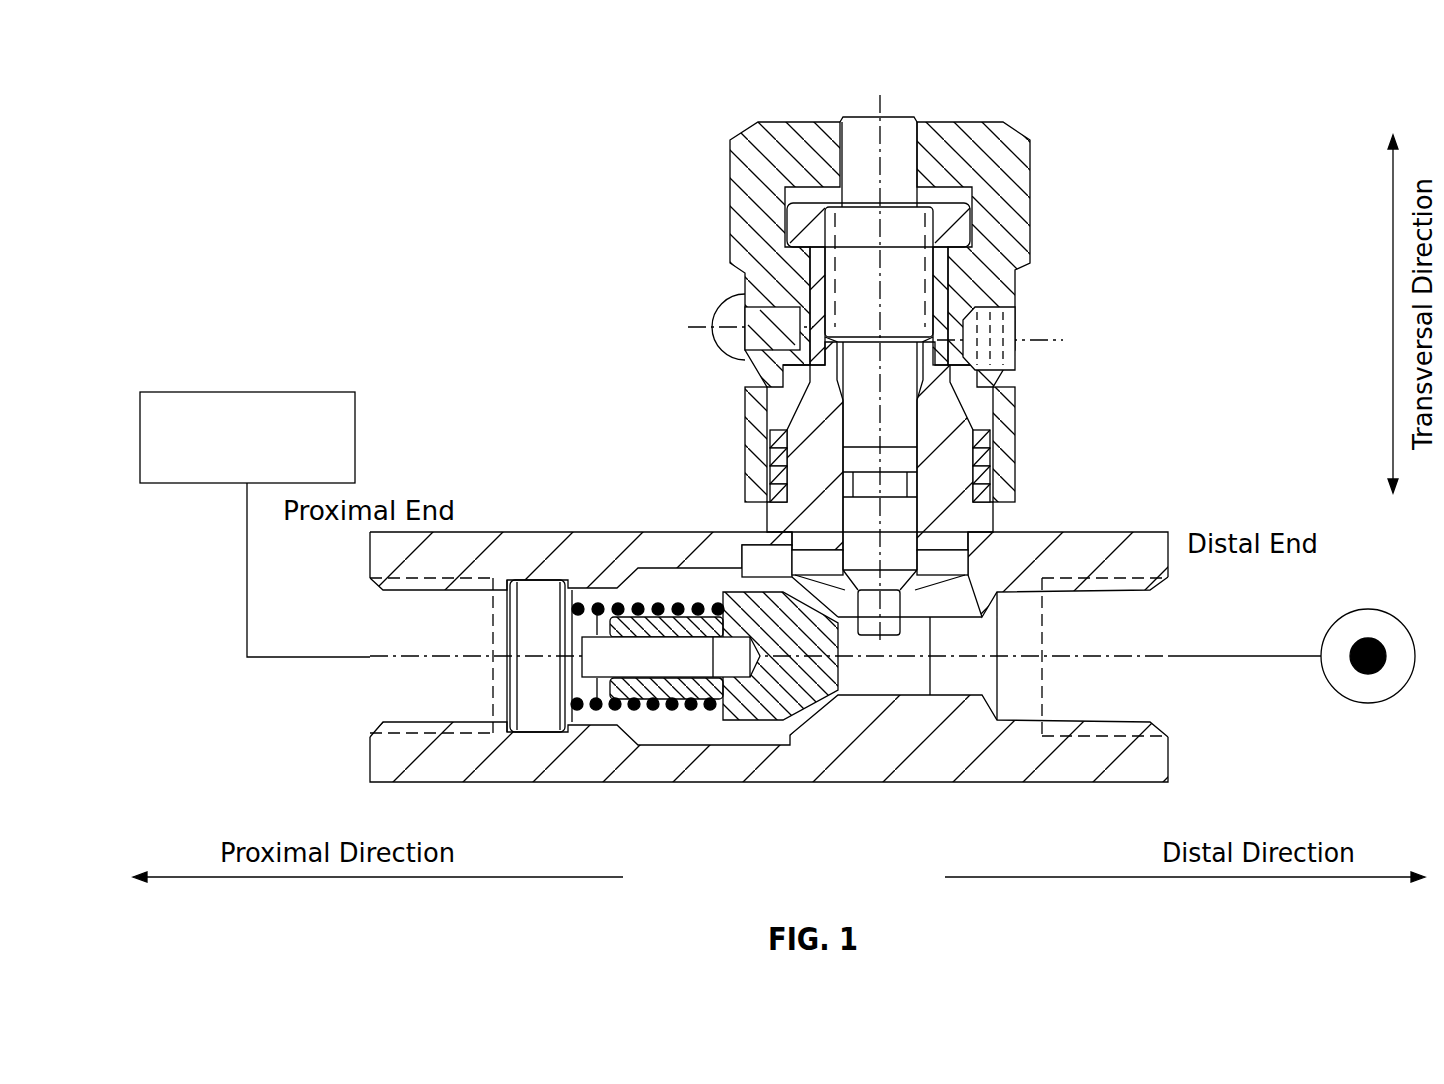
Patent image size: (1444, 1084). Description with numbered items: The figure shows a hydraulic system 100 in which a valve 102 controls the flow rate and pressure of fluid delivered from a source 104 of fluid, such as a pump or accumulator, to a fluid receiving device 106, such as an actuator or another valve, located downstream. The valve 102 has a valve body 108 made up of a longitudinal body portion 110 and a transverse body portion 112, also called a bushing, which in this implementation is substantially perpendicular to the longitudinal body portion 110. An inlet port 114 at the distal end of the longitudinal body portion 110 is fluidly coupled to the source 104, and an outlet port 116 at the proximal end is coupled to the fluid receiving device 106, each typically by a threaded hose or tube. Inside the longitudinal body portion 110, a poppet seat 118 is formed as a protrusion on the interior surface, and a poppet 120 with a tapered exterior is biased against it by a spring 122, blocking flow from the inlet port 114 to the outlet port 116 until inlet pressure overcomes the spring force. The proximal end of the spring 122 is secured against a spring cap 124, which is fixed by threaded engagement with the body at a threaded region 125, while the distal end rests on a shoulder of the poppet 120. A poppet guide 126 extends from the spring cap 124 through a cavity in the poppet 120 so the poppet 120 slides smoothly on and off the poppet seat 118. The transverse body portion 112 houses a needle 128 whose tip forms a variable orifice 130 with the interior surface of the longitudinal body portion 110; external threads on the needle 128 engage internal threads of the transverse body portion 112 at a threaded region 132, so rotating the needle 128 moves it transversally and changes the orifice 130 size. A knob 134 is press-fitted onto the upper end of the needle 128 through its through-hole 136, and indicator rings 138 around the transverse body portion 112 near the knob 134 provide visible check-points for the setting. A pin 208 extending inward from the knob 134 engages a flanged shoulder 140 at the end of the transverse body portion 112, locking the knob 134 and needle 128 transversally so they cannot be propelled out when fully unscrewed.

The hydraulic system 100 is at (386, 140).
The valve 102 is at (643, 403).
The source of fluid 104 is at (1368, 609).
The fluid receiving device 106 is at (247, 392).
The valve body 108 is at (514, 520).
The longitudinal body portion 110 is at (1130, 533).
The transverse body portion 112 is at (945, 418).
The inlet port 114 is at (1182, 707).
The outlet port 116 is at (356, 707).
The poppet seat 118 is at (828, 718).
The poppet 120 is at (780, 702).
The spring 122 is at (690, 710).
The spring cap 124 is at (548, 618).
The threaded region 125 is at (540, 569).
The poppet guide 126 is at (684, 647).
The needle 128 is at (908, 237).
The orifice 130 is at (894, 669).
The threaded region 132 is at (944, 267).
The knob 134 is at (745, 170).
The through-hole 136 is at (925, 112).
The indicator rings 138 is at (992, 477).
The shoulder 140 is at (795, 230).
The pin 208 is at (727, 313).